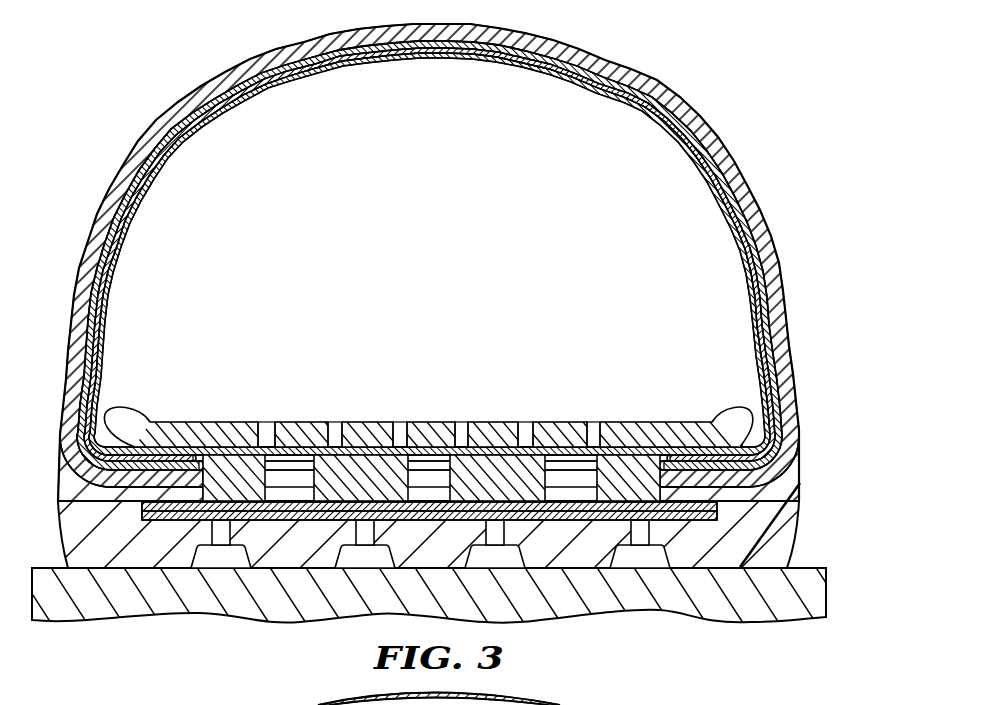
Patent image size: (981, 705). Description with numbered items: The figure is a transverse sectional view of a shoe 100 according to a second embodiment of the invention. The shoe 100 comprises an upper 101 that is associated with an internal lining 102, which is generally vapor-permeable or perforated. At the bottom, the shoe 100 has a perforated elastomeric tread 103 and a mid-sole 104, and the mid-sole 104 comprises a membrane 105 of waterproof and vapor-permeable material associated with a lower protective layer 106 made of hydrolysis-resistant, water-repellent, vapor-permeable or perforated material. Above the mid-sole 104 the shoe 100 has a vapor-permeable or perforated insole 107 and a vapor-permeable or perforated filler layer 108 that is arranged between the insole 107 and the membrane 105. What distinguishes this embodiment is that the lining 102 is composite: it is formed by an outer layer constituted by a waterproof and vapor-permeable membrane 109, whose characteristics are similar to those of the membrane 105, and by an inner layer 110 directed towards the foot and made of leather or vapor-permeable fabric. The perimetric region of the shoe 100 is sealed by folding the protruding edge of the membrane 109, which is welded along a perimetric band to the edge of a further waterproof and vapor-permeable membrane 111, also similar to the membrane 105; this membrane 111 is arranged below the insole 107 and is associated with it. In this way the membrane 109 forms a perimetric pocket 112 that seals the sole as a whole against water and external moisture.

The shoe 100 is at (655, 80).
The upper 101 is at (120, 171).
The internal lining 102 is at (188, 128).
The perforated elastomeric tread 103 is at (113, 552).
The mid-sole 104 is at (598, 482).
The membrane 105 is at (669, 472).
The lower protective layer 106 is at (163, 521).
The insole 107 is at (286, 421).
The filler layer 108 is at (217, 454).
The membrane 109 is at (551, 53).
The inner layer 110 is at (622, 100).
The membrane 111 is at (597, 422).
The perimetric pocket 112 is at (760, 480).